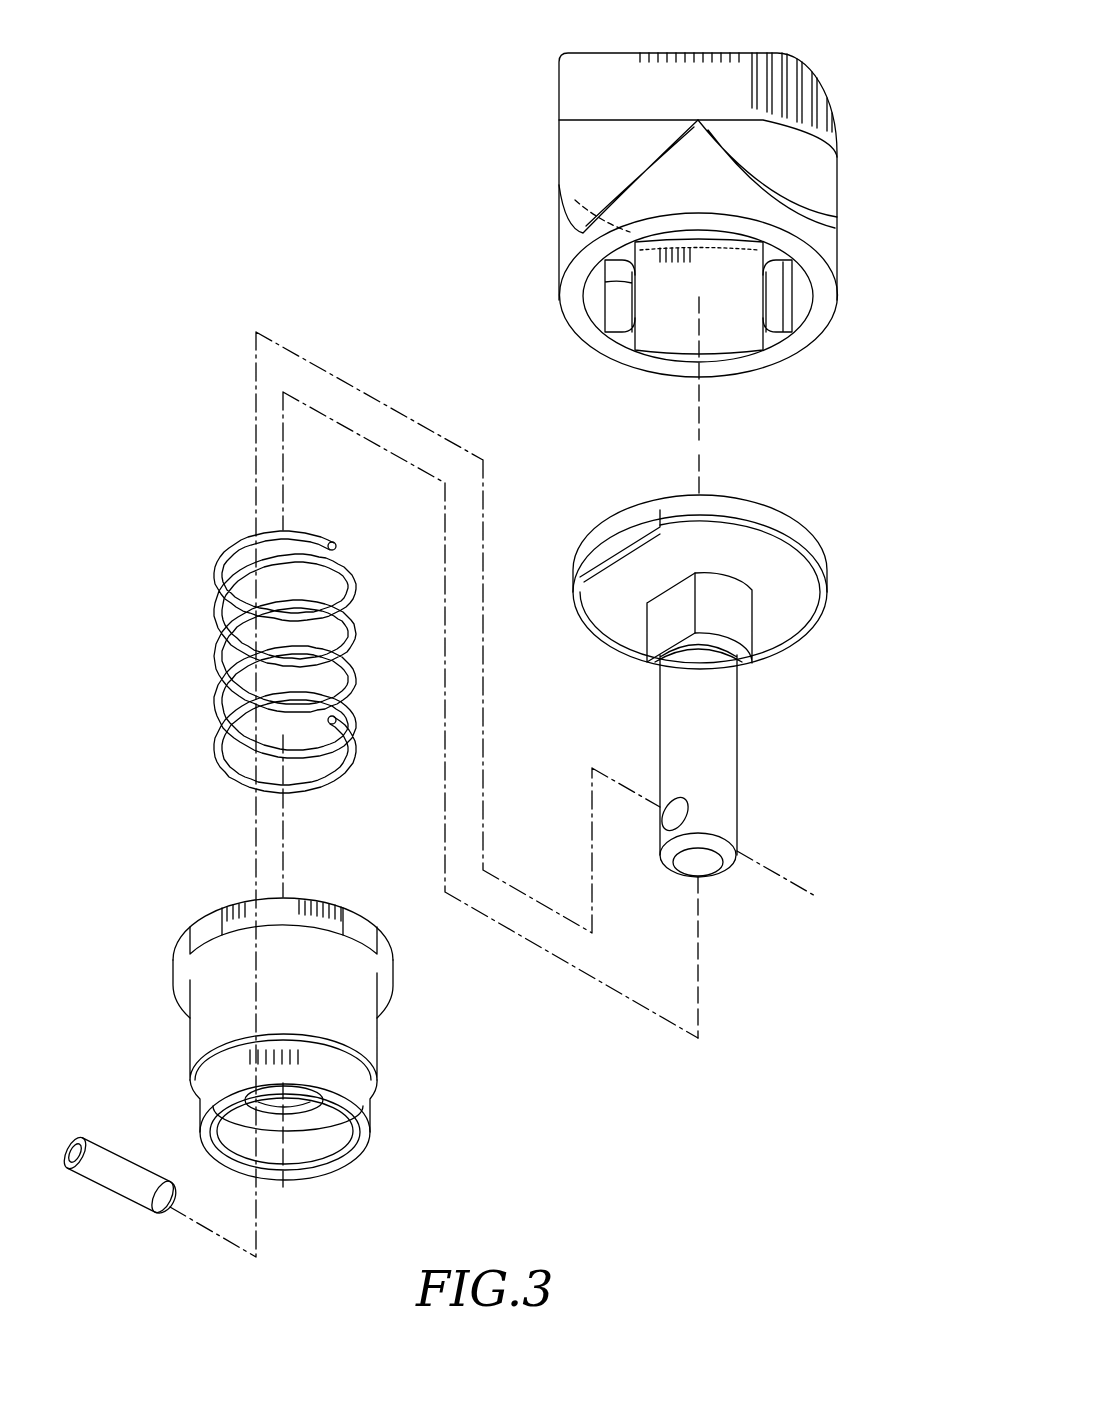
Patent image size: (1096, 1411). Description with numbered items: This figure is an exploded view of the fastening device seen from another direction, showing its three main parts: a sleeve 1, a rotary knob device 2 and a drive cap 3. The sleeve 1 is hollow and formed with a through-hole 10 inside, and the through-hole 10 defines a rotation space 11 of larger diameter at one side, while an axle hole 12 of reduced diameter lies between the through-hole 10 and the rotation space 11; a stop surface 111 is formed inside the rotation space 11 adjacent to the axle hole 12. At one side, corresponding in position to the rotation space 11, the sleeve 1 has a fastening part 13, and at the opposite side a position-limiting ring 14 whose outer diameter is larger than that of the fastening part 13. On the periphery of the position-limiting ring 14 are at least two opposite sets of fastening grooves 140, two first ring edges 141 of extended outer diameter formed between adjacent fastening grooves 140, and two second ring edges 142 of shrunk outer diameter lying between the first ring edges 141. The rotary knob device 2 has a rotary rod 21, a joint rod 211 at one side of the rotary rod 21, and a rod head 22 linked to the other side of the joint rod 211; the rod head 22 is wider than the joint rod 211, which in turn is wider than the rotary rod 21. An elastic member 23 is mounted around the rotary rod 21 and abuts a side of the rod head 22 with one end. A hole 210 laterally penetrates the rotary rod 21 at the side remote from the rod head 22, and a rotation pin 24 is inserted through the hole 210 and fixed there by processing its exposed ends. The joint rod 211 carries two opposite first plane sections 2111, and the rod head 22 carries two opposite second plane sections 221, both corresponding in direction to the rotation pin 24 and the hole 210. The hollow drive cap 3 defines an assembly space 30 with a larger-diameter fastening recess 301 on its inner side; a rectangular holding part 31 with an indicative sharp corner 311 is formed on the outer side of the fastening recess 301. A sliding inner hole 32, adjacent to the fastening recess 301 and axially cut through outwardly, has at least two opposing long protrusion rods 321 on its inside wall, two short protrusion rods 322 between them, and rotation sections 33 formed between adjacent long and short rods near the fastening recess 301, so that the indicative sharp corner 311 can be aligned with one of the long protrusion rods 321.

The sleeve 1 is at (262, 1020).
The through-hole 10 is at (302, 1100).
The rotation space 11 is at (330, 1123).
The stop surface 111 is at (242, 1107).
The axle hole 12 is at (313, 1097).
The fastening part 13 is at (362, 1127).
The position-limiting ring 14 is at (244, 917).
The fastening grooves 140 is at (208, 928).
The first ring edges 141 is at (180, 952).
The second ring edges 142 is at (247, 902).
The rotary knob device 2 is at (706, 663).
The rotary rod 21 is at (739, 761).
The hole 210 is at (688, 803).
The joint rod 211 is at (780, 594).
The first plane sections 2111 is at (672, 617).
The rod head 22 is at (700, 559).
The second plane sections 221 is at (625, 535).
The elastic member 23 is at (227, 627).
The rotation pin 24 is at (115, 1185).
The drive cap 3 is at (637, 230).
The assembly space 30 is at (468, 178).
The fastening recess 301 is at (683, 237).
The holding part 31 is at (828, 86).
The indicative sharp corner 311 is at (572, 62).
The sliding inner hole 32 is at (728, 335).
The long protrusion rods 321 is at (777, 322).
The short protrusion rods 322 is at (622, 322).
The rotation sections 33 is at (742, 250).